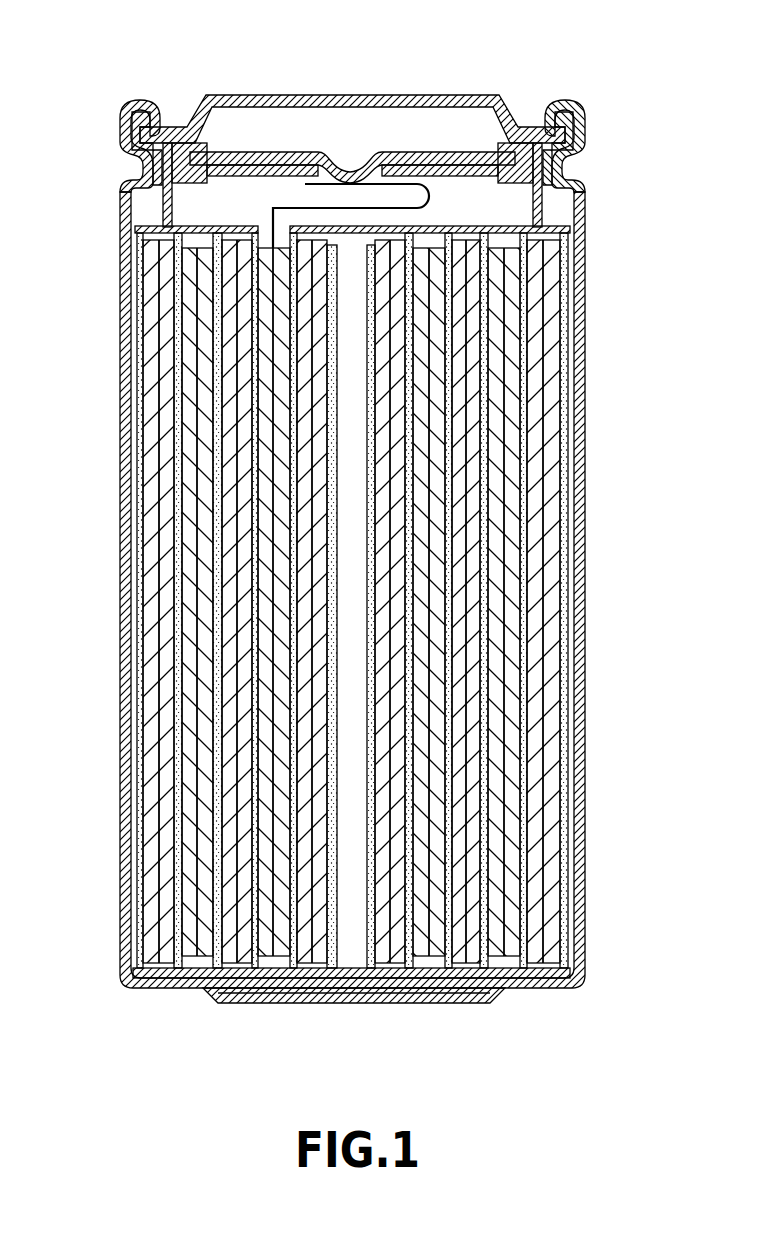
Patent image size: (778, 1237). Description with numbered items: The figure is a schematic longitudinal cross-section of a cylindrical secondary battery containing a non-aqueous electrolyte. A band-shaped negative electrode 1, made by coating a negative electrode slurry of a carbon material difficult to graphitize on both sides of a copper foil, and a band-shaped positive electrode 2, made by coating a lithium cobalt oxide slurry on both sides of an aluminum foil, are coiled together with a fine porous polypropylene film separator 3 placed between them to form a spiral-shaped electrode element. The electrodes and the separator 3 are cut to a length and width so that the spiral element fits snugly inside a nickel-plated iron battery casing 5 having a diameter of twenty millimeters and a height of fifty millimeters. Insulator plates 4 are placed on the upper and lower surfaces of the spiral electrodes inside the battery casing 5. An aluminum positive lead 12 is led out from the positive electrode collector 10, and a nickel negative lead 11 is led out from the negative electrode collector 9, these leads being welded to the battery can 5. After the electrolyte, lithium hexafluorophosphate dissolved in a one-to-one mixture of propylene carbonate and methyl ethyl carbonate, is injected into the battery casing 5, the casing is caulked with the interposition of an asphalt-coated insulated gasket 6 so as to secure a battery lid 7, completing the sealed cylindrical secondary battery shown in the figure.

The negative electrode 1 is at (550, 356).
The positive electrode 2 is at (513, 490).
The separator 3 is at (525, 636).
The insulator plate 4 is at (527, 984).
The battery casing 5 is at (120, 398).
The insulated gasket 6 is at (137, 138).
The battery lid 7 is at (300, 96).
The negative electrode collector 9 is at (160, 578).
The positive electrode collector 10 is at (193, 787).
The negative lead 11 is at (220, 1003).
The positive lead 12 is at (423, 186).